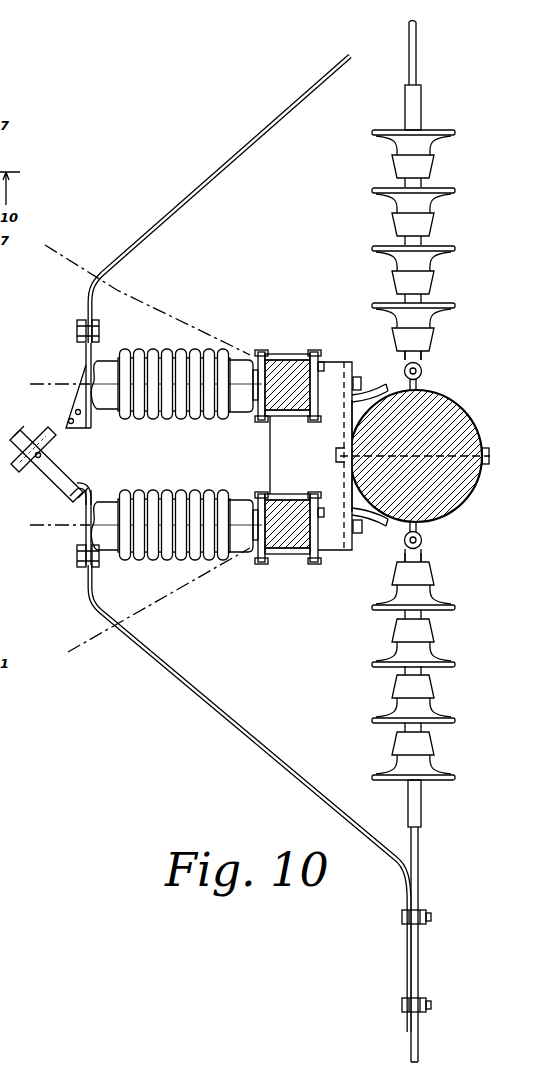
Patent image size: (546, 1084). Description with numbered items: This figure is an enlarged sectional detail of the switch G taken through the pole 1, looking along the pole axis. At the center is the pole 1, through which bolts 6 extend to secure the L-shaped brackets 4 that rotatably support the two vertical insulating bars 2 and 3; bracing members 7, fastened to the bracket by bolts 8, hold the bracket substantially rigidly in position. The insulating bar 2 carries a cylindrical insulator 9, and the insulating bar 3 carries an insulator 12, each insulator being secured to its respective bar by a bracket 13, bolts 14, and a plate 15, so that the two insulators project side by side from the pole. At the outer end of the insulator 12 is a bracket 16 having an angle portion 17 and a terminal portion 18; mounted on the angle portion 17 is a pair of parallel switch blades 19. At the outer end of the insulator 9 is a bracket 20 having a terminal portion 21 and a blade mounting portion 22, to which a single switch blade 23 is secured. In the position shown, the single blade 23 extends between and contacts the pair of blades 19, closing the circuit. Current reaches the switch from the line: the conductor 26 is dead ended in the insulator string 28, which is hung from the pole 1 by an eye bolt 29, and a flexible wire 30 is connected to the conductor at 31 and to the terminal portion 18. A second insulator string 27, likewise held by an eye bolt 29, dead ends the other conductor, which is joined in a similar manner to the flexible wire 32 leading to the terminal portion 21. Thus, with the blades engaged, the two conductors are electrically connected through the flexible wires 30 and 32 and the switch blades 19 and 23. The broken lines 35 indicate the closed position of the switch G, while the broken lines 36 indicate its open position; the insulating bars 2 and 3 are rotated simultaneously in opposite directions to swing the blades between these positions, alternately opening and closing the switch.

The pole 1 is at (441, 393).
The insulating bar 2 is at (292, 364).
The insulating bar 3 is at (300, 556).
The L-shaped bracket 4 is at (270, 462).
The bolt 6 is at (335, 456).
The bracing member 7 is at (366, 396).
The bolt 8 is at (357, 377).
The cylindrical insulator 9 is at (150, 353).
The insulator 12 is at (152, 492).
The bracket 13 is at (235, 360).
The bolt 14 is at (280, 358).
The plate 15 is at (322, 514).
The bracket 16 is at (108, 552).
The angle portion 17 is at (91, 488).
The terminal portion 18 is at (77, 556).
The switch blade 19 is at (56, 482).
The bracket 20 is at (103, 358).
The terminal portion 21 is at (77, 327).
The blade mounting portion 22 is at (77, 396).
The switch blade 23 is at (48, 440).
The conductor 26 is at (415, 70).
The insulator string 27 is at (434, 225).
The insulator string 28 is at (430, 639).
The eye bolt 29 is at (421, 379).
The flexible wire 30 is at (273, 744).
The connection 31 is at (402, 1000).
The flexible wire 32 is at (236, 156).
The broken lines 35 is at (41, 380).
The broken lines 36 is at (66, 257).
The switch G is at (272, 355).